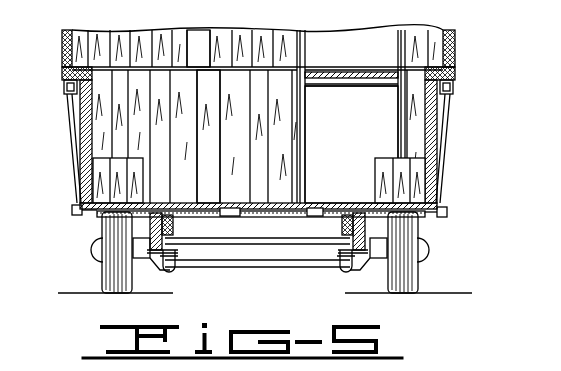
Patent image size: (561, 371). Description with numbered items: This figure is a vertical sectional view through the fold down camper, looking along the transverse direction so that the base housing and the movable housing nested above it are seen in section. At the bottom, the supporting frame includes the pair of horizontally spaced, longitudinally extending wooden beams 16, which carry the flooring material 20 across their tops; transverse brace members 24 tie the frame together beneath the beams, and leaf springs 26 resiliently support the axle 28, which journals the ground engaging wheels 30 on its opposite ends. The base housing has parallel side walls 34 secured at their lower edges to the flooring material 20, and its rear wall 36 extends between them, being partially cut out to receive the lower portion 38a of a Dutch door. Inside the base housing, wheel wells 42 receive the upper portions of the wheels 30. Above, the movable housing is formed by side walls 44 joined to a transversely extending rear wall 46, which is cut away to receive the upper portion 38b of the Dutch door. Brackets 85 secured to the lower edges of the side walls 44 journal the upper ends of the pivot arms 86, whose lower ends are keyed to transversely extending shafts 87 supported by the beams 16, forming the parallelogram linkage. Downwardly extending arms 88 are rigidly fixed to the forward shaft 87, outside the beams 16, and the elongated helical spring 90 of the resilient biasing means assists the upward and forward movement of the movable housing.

The wooden beams 16 is at (173, 226).
The flooring material 20 is at (213, 220).
The transverse brace members 24 is at (212, 243).
The leaf springs 26 is at (172, 264).
The axle 28 is at (251, 263).
The ground engaging wheels 30 is at (118, 270).
The side walls 34 is at (80, 122).
The rear wall 36 is at (217, 125).
The lower portion of Dutch door 38a is at (308, 117).
The upper portion of Dutch door 38b is at (308, 48).
The wheel wells 42 is at (100, 170).
The side walls 44 is at (62, 38).
The rear wall 46 is at (207, 54).
The brackets 85 is at (64, 84).
The pivot arm 86 is at (68, 100).
The shafts 87 is at (84, 214).
The downwardly extending arms 88 is at (137, 257).
The helical spring 90 is at (150, 220).